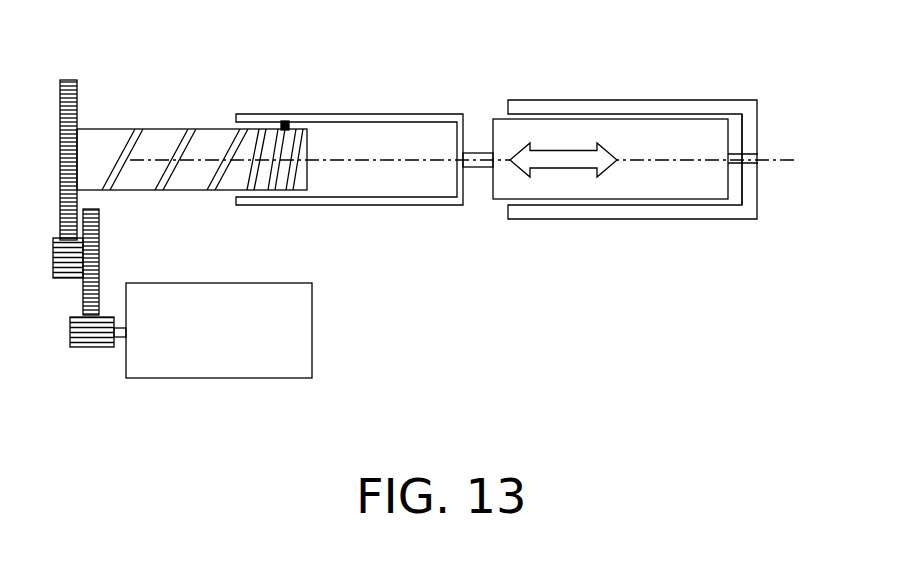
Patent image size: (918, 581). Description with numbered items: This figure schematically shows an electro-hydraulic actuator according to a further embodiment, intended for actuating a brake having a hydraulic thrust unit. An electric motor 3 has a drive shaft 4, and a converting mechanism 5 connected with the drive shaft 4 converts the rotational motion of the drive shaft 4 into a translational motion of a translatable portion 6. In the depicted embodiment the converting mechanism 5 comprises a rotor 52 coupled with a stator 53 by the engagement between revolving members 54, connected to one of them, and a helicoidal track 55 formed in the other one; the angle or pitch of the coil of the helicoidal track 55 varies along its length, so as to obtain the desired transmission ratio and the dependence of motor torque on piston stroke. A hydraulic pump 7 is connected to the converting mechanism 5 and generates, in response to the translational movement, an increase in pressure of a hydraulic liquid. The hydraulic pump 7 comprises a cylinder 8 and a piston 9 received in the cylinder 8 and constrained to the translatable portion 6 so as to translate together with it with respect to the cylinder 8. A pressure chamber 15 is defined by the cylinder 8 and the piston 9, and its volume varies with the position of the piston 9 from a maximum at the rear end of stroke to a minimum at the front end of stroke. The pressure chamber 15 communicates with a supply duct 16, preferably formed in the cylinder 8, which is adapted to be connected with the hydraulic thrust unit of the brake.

The electric motor 3 is at (247, 293).
The drive shaft 4 is at (120, 342).
The converting mechanism 5 is at (270, 138).
The rotor 52 is at (162, 140).
The stator 53 is at (311, 114).
The revolving members 54 is at (284, 122).
The helicoidal track 55 is at (123, 172).
The translatable portion 6 is at (477, 150).
The hydraulic pump 7 is at (642, 182).
The cylinder 8 is at (548, 103).
The piston 9 is at (632, 130).
The pressure chamber 15 is at (733, 143).
The supply duct 16 is at (755, 162).